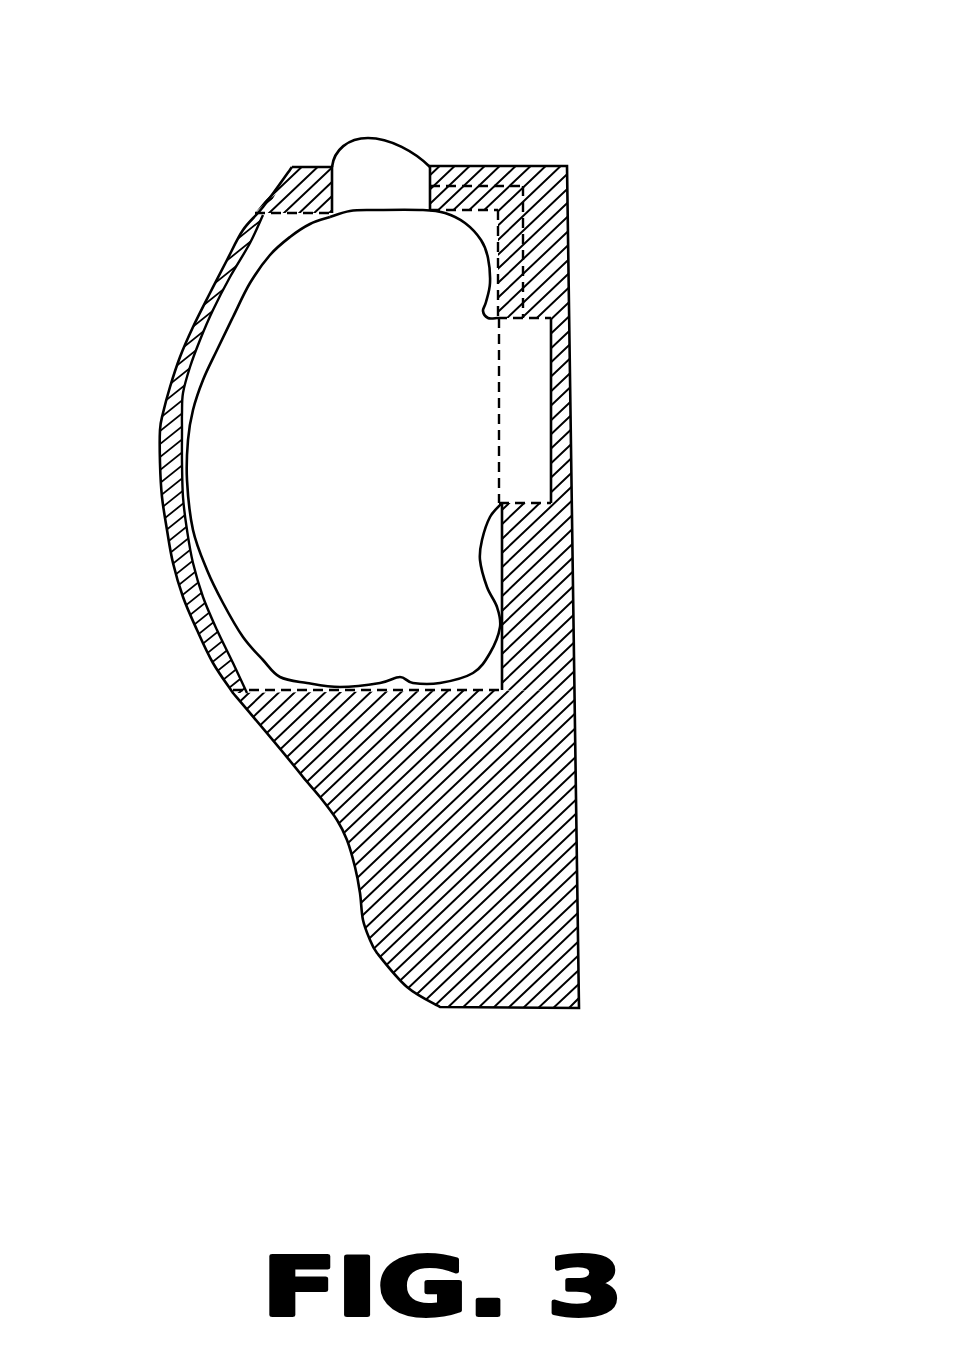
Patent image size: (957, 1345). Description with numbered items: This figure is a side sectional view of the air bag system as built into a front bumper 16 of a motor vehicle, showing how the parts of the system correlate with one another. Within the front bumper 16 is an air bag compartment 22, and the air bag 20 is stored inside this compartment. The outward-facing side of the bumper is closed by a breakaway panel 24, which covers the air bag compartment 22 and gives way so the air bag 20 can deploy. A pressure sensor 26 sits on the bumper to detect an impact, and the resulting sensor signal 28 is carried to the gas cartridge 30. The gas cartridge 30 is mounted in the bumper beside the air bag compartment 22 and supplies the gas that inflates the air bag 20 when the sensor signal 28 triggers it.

The front bumper 16 is at (283, 758).
The air bag 20 is at (237, 542).
The air bag compartment 22 is at (495, 655).
The breakaway panel 24 is at (163, 425).
The pressure sensor 26 is at (390, 144).
The sensor signal 28 is at (563, 166).
The gas cartridge 30 is at (548, 390).